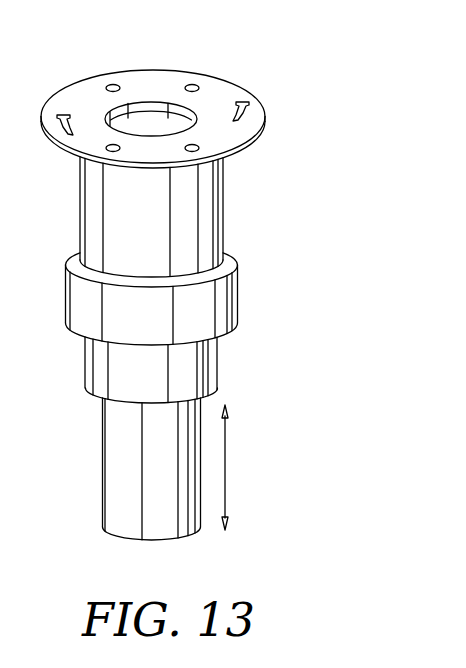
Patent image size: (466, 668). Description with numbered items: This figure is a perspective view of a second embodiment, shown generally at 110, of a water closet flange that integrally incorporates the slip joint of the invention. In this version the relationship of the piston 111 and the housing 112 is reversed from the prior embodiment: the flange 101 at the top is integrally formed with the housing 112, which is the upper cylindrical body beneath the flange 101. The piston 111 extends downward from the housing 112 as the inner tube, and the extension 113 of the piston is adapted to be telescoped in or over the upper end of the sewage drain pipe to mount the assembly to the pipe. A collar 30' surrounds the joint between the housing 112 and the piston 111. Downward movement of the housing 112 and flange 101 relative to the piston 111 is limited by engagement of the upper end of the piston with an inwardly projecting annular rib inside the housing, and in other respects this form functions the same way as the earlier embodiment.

The flange 101 is at (212, 95).
The housing 112 is at (215, 213).
The collar 30' is at (197, 328).
The piston 111 is at (122, 453).
The extension of the piston 113 is at (122, 515).
The alternate embodiment of water closet flange with slip joint 110 is at (177, 332).